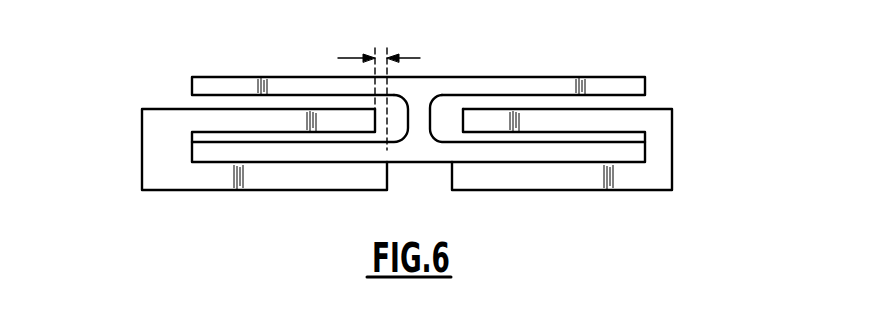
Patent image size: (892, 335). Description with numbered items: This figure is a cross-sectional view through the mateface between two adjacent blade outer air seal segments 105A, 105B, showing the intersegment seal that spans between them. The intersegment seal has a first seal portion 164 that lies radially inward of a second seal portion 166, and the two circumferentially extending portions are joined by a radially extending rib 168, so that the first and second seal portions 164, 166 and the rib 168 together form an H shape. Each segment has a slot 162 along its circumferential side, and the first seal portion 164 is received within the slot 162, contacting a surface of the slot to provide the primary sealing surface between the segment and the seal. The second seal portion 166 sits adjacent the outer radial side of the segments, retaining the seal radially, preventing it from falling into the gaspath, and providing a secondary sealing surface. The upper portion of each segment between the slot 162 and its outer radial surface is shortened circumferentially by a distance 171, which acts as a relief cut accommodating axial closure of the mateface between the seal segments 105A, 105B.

The seal segment 105A is at (662, 120).
The seal segment 105B is at (160, 120).
The slot 162 is at (213, 137).
The first seal portion 164 is at (543, 153).
The second seal portion 166 is at (558, 84).
The rib 168 is at (418, 120).
The distance 171 is at (420, 58).